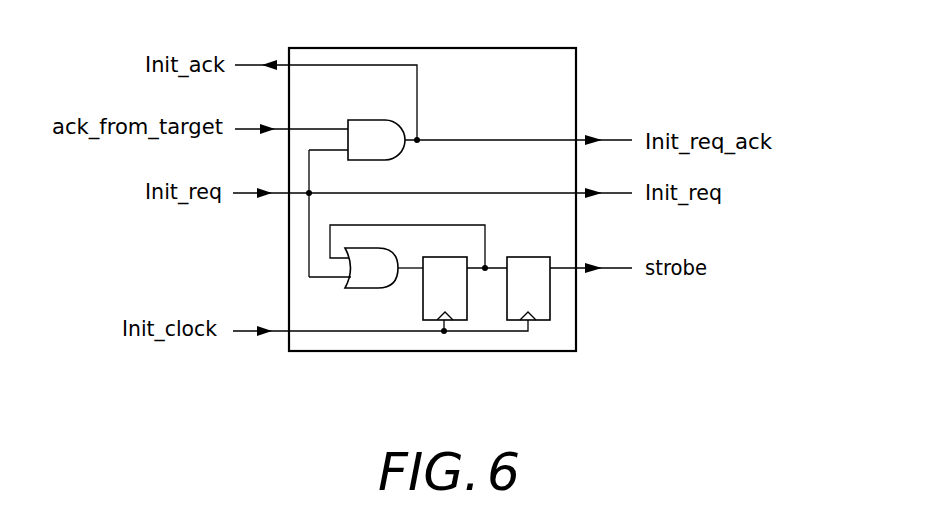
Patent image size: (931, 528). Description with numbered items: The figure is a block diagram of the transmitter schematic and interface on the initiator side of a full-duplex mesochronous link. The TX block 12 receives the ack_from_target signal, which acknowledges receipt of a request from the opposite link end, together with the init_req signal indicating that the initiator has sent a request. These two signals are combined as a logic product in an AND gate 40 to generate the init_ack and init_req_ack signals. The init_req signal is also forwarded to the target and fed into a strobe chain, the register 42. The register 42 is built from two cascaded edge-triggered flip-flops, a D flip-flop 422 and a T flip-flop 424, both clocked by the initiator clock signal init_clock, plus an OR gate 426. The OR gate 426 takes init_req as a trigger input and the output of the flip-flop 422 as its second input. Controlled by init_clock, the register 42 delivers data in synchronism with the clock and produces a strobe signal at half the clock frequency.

The TX block 12 is at (432, 203).
The AND gate 40 is at (371, 130).
The register 42 is at (377, 355).
The flip-flop 422 is at (460, 310).
The flip-flop 424 is at (543, 310).
The OR gate 426 is at (368, 273).